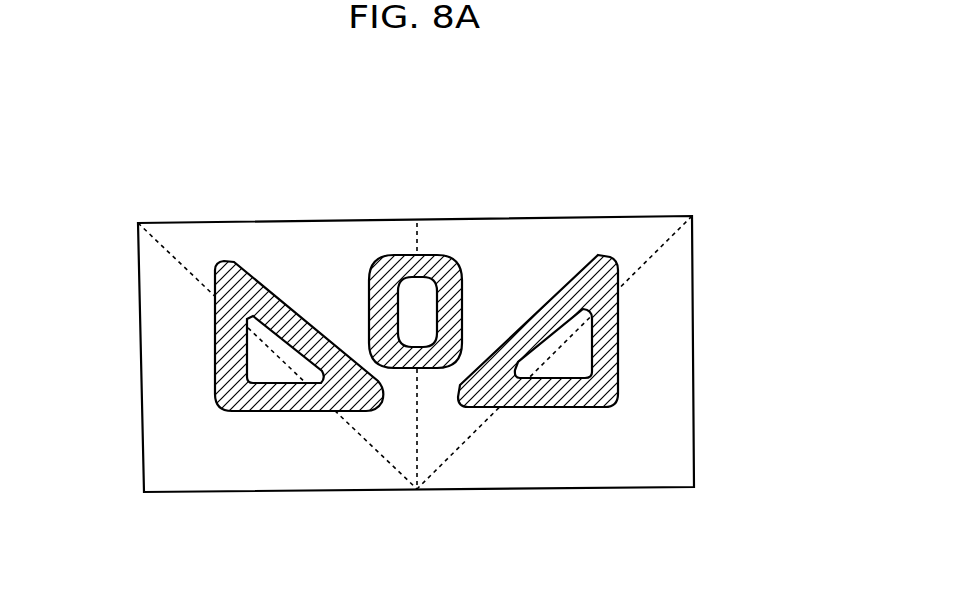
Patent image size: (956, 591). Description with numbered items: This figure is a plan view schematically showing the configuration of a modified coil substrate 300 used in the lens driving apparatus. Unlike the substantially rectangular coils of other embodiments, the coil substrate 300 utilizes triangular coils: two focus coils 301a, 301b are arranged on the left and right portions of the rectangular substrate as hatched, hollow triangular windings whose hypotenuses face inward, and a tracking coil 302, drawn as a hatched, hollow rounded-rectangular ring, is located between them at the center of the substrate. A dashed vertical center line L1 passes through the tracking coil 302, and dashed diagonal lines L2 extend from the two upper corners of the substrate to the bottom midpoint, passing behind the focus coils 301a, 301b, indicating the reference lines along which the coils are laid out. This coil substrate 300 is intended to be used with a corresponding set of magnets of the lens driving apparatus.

The coil substrate 300 is at (385, 180).
The focus coil 301a is at (291, 411).
The focus coil 301b is at (563, 408).
The tracking coil 302 is at (384, 256).
The vertical center line L1 is at (418, 231).
The diagonal line L2 is at (160, 243).